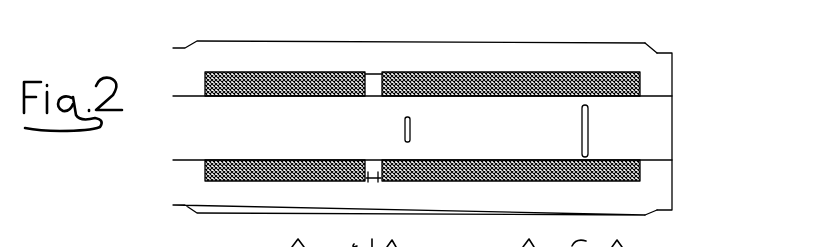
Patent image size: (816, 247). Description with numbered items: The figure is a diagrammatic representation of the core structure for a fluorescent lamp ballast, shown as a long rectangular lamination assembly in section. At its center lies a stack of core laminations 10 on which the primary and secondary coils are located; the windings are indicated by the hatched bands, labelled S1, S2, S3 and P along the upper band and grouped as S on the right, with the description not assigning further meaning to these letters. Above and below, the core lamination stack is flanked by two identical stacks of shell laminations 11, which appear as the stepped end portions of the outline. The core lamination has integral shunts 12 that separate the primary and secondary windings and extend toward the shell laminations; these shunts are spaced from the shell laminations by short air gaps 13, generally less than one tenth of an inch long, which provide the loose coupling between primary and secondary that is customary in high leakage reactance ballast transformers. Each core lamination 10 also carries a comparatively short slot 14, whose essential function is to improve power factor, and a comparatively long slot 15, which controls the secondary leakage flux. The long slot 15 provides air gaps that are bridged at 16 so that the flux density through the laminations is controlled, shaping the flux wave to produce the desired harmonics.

The core lamination 10 is at (658, 120).
The shell lamination 11 is at (660, 47).
The integral shunt 12 is at (373, 88).
The air gap 13 is at (379, 72).
The short slot 14 is at (411, 129).
The long slot 15 is at (590, 125).
The bridge 16 is at (578, 157).
The laminated sheet S is at (478, 72).
The first sheet layer S1 is at (222, 72).
The second sheet layer S2 is at (270, 72).
The intermediate layer P is at (293, 72).
The third sheet layer S3 is at (332, 72).